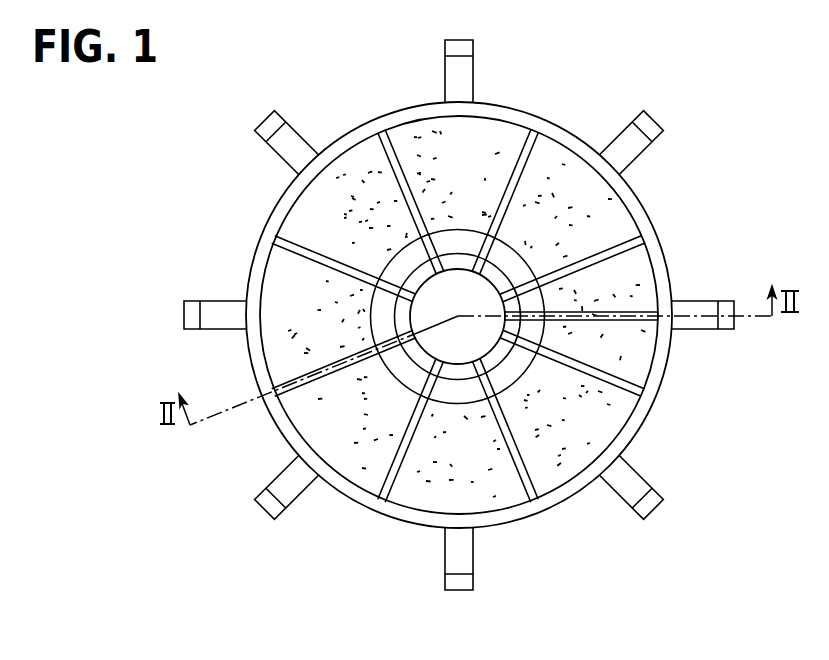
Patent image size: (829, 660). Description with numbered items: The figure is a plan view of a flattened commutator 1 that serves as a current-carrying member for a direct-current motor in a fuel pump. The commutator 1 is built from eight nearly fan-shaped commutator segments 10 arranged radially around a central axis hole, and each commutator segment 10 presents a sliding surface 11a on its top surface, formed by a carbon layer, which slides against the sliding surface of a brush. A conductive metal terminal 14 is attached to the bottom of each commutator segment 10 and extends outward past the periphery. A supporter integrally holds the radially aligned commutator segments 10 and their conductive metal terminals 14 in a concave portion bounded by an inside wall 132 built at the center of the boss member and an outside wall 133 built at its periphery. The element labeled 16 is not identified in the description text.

The commutator 1 is at (691, 621).
The commutator segment 10 is at (557, 506).
The sliding surface 11a is at (607, 420).
The conductive metal terminal 14 is at (660, 503).
The radial rib 16 is at (655, 401).
The inside wall 132 is at (508, 377).
The outside wall 133 is at (582, 493).